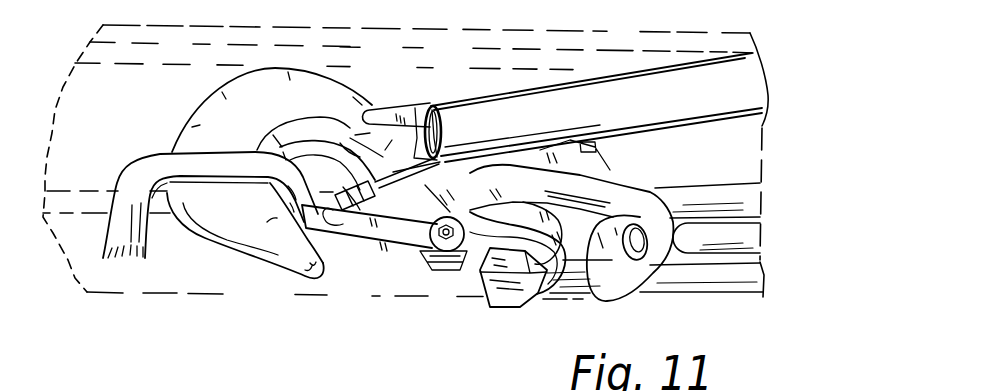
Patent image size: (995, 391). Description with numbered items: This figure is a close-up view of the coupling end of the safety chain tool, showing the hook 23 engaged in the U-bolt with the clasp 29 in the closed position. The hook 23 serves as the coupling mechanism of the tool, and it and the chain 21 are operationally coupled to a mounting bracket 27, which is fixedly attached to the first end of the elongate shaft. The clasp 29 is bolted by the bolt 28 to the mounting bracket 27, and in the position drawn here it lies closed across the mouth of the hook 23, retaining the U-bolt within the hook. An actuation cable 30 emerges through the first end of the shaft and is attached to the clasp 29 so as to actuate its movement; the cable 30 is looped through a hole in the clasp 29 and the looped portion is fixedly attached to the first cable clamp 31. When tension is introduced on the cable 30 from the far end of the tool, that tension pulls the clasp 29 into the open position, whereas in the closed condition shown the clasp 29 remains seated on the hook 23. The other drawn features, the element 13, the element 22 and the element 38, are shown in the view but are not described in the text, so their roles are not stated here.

The handle tube 13 is at (585, 97).
The chain 21 is at (690, 197).
The hoop bracket 22 is at (130, 182).
The hook 23 is at (223, 97).
The mounting bracket 27 is at (395, 108).
The bolt 28 is at (512, 297).
The clasp 29 is at (377, 257).
The actuation cable 30 is at (412, 110).
The first cable clamp 31 is at (360, 180).
The strap loop 38 is at (283, 262).